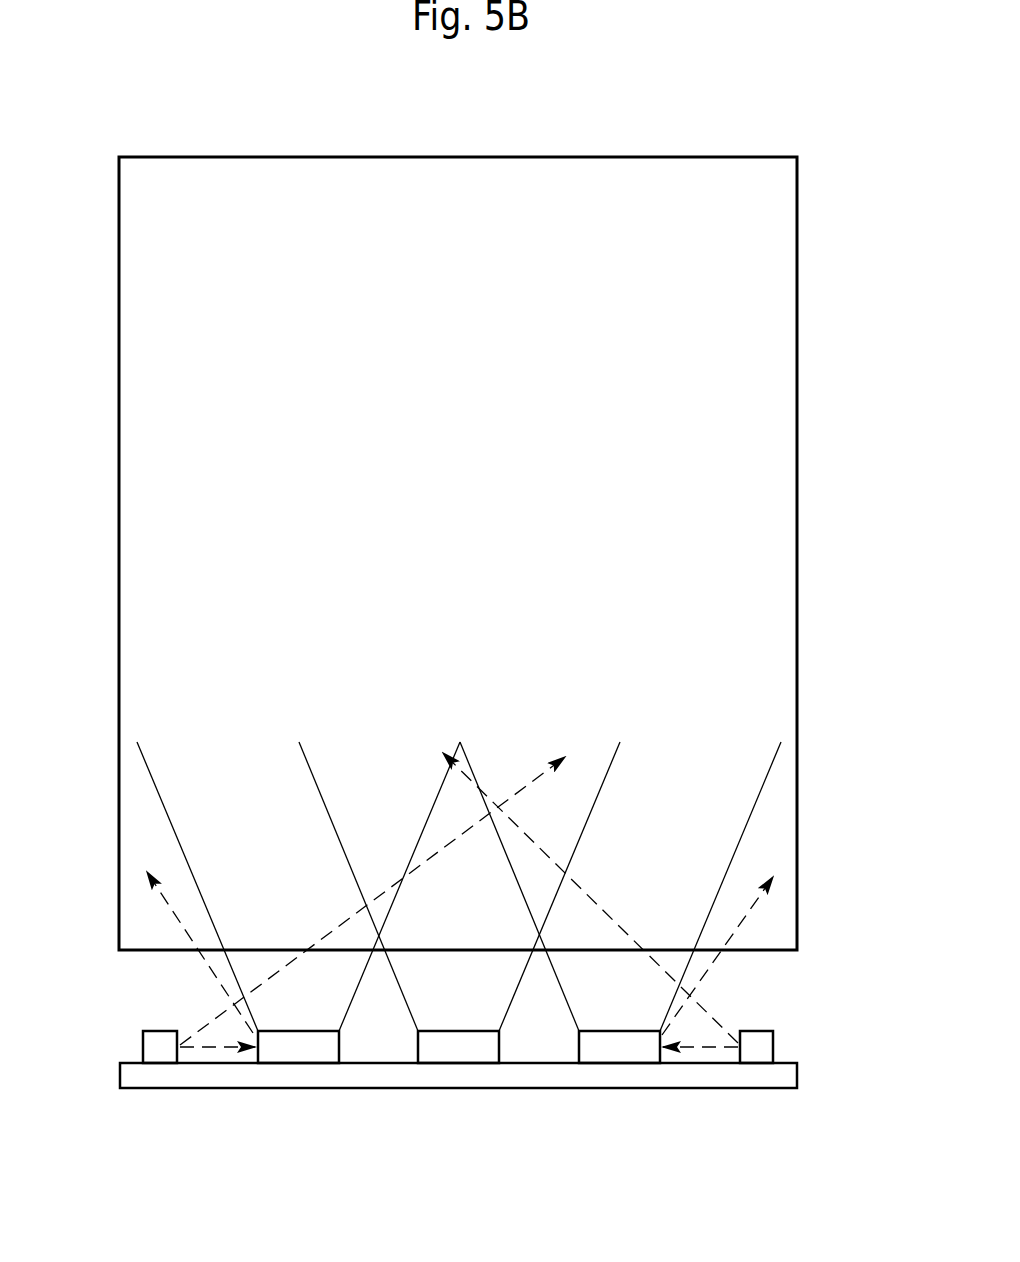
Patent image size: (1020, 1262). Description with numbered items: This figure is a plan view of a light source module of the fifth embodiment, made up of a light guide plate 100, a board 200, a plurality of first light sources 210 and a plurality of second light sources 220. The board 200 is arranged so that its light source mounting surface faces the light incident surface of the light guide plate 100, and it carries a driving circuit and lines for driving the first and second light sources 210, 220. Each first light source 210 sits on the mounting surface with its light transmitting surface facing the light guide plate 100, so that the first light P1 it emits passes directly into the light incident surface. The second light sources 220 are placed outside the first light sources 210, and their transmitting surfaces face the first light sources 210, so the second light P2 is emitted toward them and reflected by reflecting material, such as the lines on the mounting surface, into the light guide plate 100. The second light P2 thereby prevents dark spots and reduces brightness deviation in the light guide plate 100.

The light guide plate 100 is at (776, 282).
The board 200 is at (790, 1073).
The first light source 210 is at (300, 1052).
The second light source 220 is at (156, 1050).
The first light P1 is at (157, 793).
The second light P2 is at (427, 855).